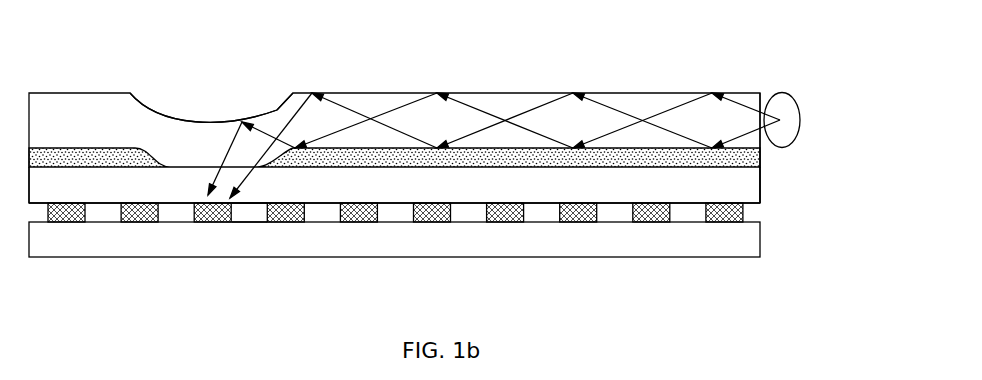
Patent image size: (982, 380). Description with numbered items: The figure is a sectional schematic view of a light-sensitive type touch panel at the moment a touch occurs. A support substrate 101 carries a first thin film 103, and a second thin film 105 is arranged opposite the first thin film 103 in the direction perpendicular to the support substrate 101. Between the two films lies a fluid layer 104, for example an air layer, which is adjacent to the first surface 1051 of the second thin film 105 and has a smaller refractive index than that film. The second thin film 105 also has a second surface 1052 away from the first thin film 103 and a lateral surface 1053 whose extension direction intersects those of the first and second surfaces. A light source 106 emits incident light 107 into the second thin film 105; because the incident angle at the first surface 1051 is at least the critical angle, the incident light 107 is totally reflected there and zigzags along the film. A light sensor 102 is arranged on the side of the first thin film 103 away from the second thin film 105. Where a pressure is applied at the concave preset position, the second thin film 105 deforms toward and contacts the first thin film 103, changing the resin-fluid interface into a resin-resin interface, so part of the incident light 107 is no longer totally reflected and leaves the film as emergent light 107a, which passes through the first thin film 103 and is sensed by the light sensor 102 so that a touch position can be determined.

The support substrate 101 is at (394, 272).
The light sensor 102 is at (395, 259).
The first thin film 103 is at (394, 255).
The fluid layer 104 is at (394, 99).
The second thin film 105 is at (394, 117).
The first surface 1051 is at (157, 103).
The second surface 1052 is at (221, 71).
The lateral surface 1053 is at (674, 119).
The light source 106 is at (504, 114).
The incident light 107 is at (430, 194).
The emergent light 107a is at (247, 167).